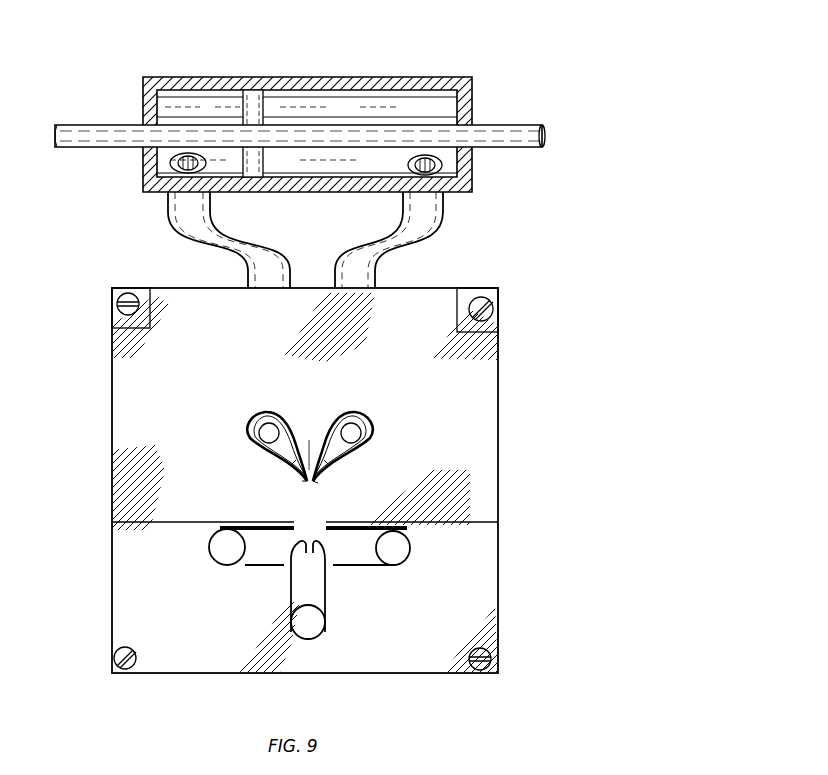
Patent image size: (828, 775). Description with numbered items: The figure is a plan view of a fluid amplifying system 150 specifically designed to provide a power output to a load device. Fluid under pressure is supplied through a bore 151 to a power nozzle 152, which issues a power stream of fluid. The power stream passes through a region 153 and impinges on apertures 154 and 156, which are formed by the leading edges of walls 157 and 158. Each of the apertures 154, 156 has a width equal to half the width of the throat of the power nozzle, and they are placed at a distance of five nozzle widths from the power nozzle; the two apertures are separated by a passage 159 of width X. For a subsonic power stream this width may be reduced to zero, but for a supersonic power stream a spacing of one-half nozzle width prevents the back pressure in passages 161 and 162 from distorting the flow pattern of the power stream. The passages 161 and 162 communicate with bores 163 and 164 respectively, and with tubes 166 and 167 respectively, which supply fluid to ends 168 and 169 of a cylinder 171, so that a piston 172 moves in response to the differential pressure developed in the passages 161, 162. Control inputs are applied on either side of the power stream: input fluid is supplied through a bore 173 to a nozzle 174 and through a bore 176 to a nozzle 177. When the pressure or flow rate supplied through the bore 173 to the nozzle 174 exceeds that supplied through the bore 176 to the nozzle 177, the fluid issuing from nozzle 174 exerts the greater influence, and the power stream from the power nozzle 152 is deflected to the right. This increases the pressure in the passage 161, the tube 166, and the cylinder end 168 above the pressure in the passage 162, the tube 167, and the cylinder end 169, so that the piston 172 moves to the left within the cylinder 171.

The fluid amplifying system 150 is at (111, 565).
The bore 151 is at (318, 622).
The power nozzle 152 is at (313, 570).
The region 153 is at (320, 522).
The aperture 154 is at (318, 483).
The aperture 156 is at (302, 481).
The wall 157 is at (360, 452).
The wall 158 is at (249, 440).
The passage 159 is at (309, 468).
The passage 161 is at (334, 470).
The passage 162 is at (290, 466).
The bore 163 is at (372, 427).
The bore 164 is at (262, 411).
The tube 166 is at (432, 243).
The tube 167 is at (186, 236).
The cylinder end 168 is at (375, 112).
The cylinder end 169 is at (218, 106).
The cylinder 171 is at (143, 185).
The piston 172 is at (263, 118).
The bore 173 is at (220, 554).
The nozzle 174 is at (281, 543).
The bore 176 is at (410, 551).
The nozzle 177 is at (333, 543).